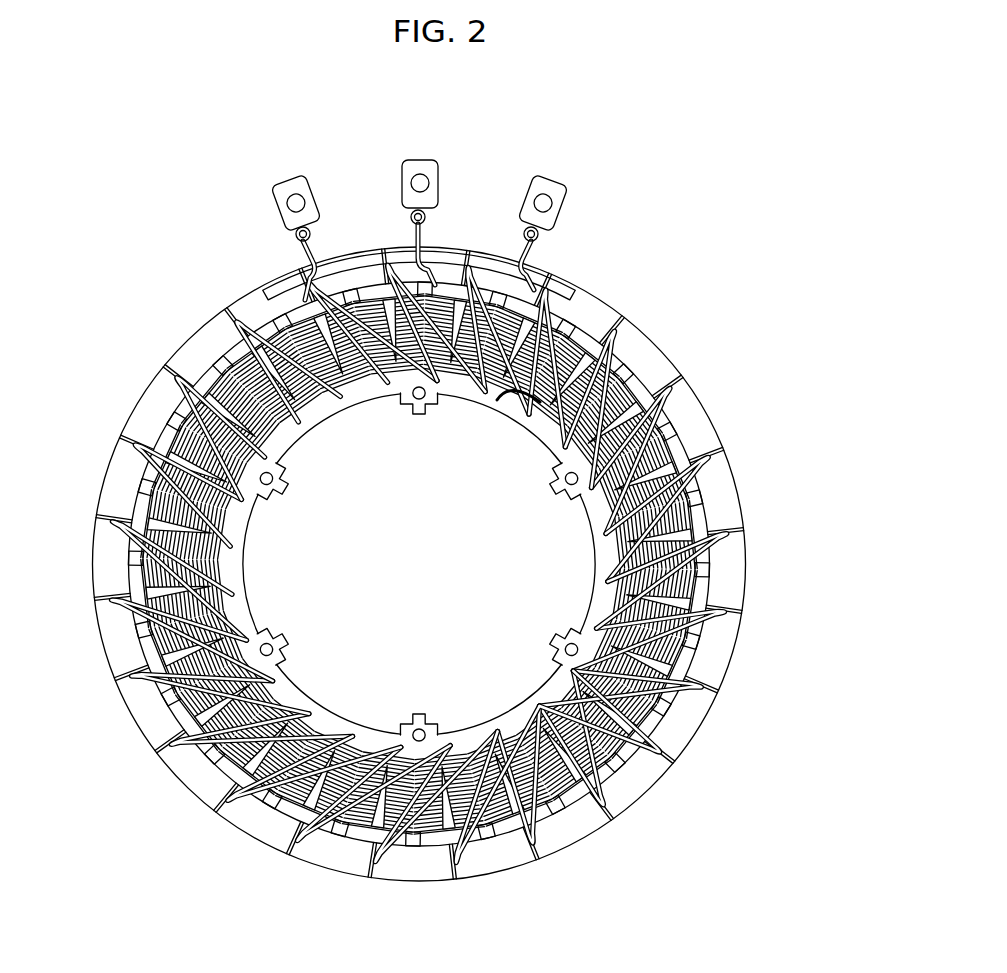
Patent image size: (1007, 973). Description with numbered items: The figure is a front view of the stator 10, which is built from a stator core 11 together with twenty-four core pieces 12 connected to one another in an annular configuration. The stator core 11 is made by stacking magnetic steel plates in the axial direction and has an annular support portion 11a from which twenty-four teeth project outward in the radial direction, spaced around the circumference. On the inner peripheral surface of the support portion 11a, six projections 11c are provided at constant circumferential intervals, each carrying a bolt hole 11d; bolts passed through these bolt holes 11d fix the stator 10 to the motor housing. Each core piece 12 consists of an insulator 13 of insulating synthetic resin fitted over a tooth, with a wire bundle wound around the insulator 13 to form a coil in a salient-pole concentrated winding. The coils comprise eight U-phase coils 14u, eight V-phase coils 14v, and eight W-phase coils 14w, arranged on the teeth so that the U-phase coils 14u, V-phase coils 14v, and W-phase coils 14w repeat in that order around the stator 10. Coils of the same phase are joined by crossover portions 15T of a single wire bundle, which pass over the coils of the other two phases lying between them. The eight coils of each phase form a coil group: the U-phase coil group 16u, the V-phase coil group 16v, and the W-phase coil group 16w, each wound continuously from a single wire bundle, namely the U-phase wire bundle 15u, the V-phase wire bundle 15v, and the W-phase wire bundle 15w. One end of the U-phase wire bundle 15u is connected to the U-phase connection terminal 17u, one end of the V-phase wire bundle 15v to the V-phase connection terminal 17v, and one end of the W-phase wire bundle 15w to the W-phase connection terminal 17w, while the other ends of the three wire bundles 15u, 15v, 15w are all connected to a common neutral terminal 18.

The stator 10 is at (422, 516).
The stator core 11 is at (419, 564).
The support portion 11a is at (419, 564).
The projections 11c is at (419, 564).
The bolt holes 11d is at (419, 564).
The core pieces 12 is at (418, 564).
The insulator 13 is at (419, 564).
The U-phase coils 14u is at (418, 564).
The V-phase coils 14v is at (419, 563).
The W-phase coils 14w is at (419, 564).
The crossover portions 15T is at (540, 405).
The U-phase wire bundle 15u is at (296, 232).
The V-phase wire bundle 15v is at (410, 215).
The W-phase wire bundle 15w is at (525, 230).
The U-phase coil group 16u is at (590, 300).
The V-phase coil group 16v is at (658, 352).
The W-phase coil group 16w is at (725, 420).
The U-phase connection terminal 17u is at (300, 172).
The V-phase connection terminal 17v is at (418, 160).
The W-phase connection terminal 17w is at (548, 170).
The neutral terminal 18 is at (419, 275).